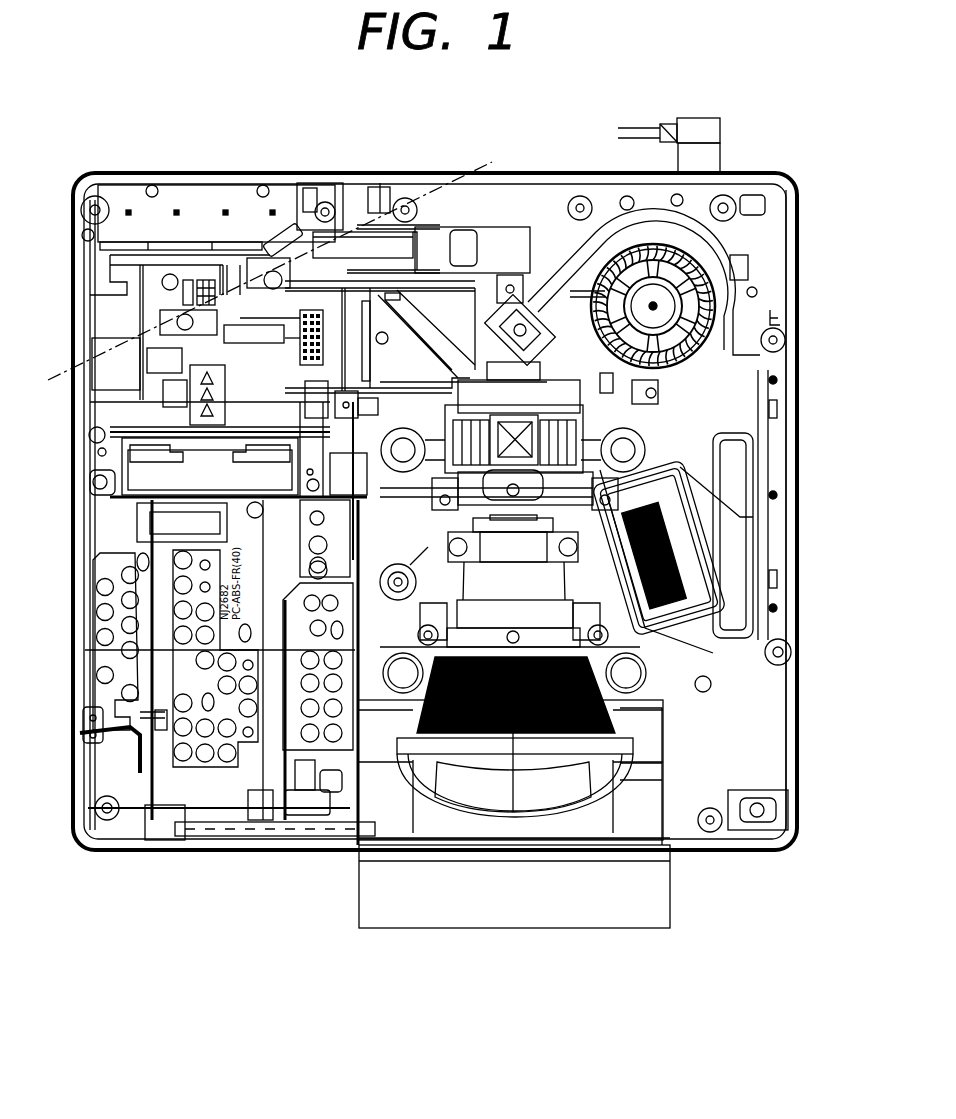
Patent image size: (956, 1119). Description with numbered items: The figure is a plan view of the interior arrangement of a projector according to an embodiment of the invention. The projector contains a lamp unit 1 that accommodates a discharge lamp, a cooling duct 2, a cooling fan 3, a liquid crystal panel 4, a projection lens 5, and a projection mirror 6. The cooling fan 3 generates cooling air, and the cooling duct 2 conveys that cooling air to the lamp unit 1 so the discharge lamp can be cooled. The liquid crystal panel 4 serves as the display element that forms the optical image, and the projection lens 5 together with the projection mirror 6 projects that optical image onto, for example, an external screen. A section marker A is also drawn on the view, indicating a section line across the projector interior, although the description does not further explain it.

The lamp unit 1 is at (96, 346).
The cooling duct 2 is at (470, 258).
The cooling fan 3 is at (353, 243).
The liquid crystal panel 4 is at (565, 418).
The projection lens 5 is at (500, 795).
The projection mirror 6 is at (641, 917).
The section line A- A is at (269, 272).